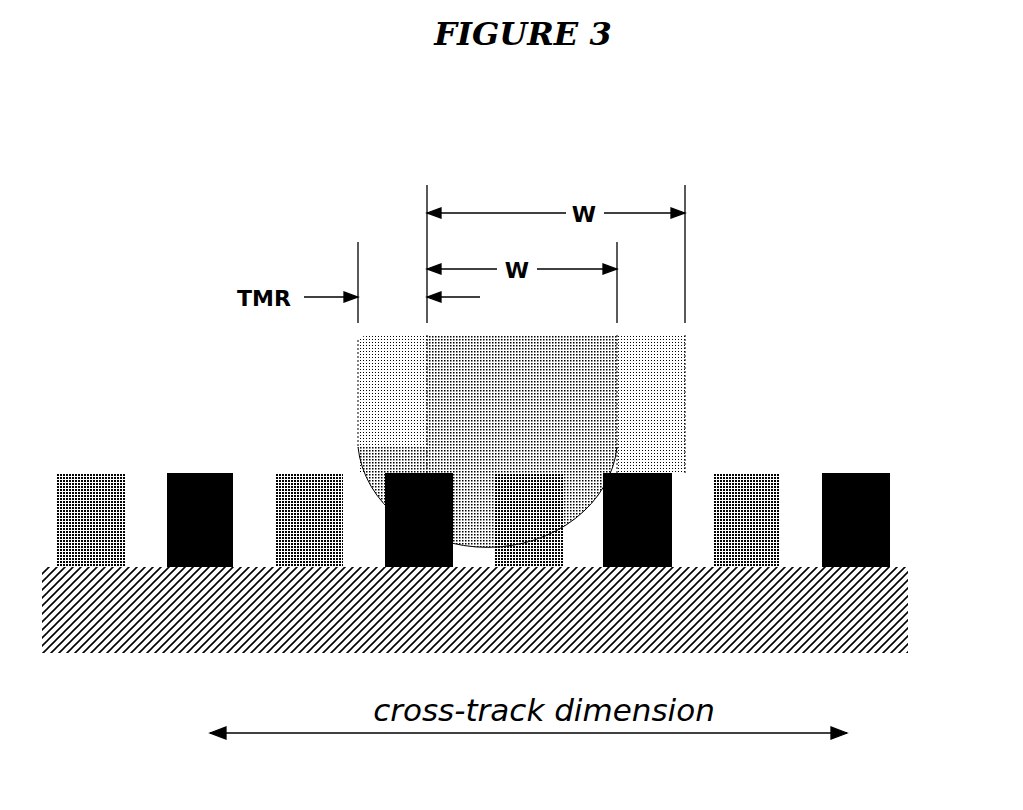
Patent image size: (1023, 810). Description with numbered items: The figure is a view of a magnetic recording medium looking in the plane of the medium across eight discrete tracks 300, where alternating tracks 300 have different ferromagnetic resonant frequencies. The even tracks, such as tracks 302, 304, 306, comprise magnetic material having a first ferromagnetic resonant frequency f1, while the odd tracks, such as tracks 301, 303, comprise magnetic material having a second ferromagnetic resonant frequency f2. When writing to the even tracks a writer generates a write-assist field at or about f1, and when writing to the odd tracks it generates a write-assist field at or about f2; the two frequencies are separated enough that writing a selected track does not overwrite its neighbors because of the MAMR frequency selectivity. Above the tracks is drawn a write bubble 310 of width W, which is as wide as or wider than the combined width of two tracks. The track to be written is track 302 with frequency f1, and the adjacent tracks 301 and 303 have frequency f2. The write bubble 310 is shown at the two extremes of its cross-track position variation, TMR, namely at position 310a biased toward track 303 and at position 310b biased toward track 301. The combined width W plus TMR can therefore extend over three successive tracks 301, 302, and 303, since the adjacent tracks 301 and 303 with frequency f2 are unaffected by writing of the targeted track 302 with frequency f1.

The tracks 300 is at (517, 563).
The track 301 is at (416, 568).
The track 302 is at (531, 568).
The track 303 is at (641, 568).
The track 304 is at (745, 568).
The track 306 is at (311, 568).
The write bubble 310 is at (631, 336).
The write bubble position 310a is at (690, 385).
The write bubble position 310b is at (357, 396).